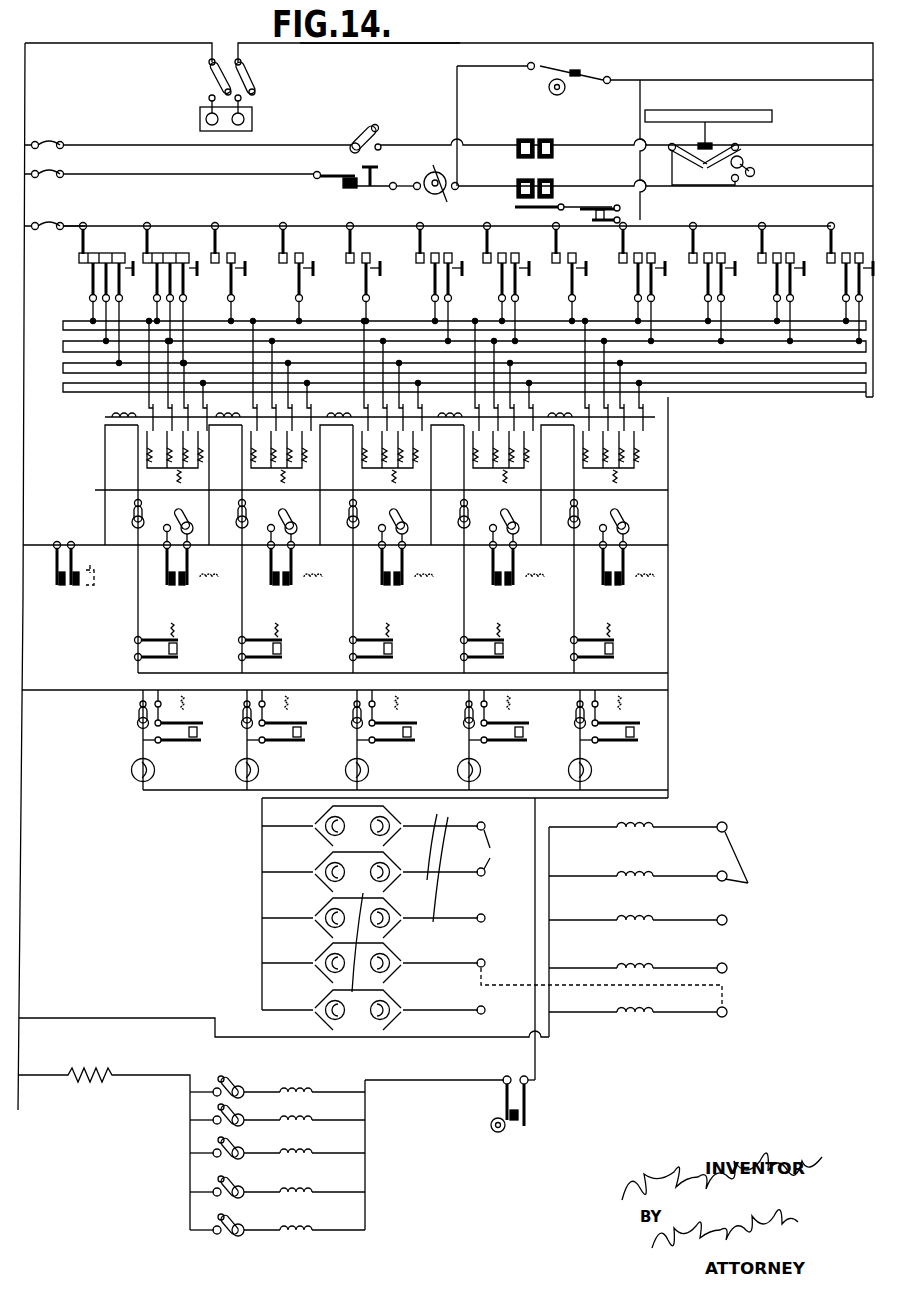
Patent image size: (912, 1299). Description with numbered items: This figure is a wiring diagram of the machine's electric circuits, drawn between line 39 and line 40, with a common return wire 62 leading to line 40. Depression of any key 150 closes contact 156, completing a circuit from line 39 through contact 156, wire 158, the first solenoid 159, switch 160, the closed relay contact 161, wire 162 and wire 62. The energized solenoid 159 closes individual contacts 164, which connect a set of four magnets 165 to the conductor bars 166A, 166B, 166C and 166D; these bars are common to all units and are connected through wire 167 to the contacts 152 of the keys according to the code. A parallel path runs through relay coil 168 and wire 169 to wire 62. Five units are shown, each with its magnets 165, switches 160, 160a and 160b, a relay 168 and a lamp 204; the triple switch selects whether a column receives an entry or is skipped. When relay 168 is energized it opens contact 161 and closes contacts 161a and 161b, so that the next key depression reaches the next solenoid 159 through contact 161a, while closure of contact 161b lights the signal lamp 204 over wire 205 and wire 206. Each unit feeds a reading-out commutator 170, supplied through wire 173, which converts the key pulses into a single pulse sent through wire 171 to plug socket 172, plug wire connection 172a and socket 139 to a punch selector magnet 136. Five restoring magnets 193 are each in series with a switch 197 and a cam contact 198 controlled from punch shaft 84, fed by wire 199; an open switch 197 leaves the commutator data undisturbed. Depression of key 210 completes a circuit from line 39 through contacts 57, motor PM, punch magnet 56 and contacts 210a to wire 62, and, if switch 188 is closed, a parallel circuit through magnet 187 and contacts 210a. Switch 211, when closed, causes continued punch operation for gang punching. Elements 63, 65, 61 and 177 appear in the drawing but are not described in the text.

The line 39 is at (115, 44).
The line 40 is at (412, 44).
The wire 62 is at (873, 70).
The conductor 63 is at (693, 80).
The cam contacts 65 is at (575, 72).
The switch 188 is at (362, 133).
The magnet 187 is at (548, 146).
The punch magnet 56 is at (552, 184).
The contacts 61 is at (598, 222).
The contacts 57 is at (345, 185).
The motor PM is at (425, 190).
The key 210 is at (712, 130).
The contacts 210a is at (705, 165).
The switch 211 is at (748, 165).
The key 150 is at (205, 250).
The wire 167 is at (72, 225).
The contacts 152 is at (106, 252).
The conductor bar 166D is at (63, 321).
The conductor bar 166C is at (63, 343).
The conductor bar 166B is at (63, 365).
The conductor bar 166A is at (63, 388).
The switch 160 is at (134, 512).
The solenoid 159 is at (214, 412).
The contacts 164 is at (150, 410).
The magnets 165 is at (150, 452).
The wire 158 is at (100, 488).
The relay coil 168 is at (176, 480).
The wire 169 is at (170, 525).
The switch 160a is at (412, 515).
The contact 161a is at (170, 588).
The relay contact 161 is at (180, 651).
The contact 156 is at (64, 588).
The wire 162 is at (398, 675).
The wire 205 is at (48, 692).
The switch 160b is at (138, 713).
The contact 161b is at (205, 744).
The signal lamp 204 is at (158, 771).
The wire 206 is at (152, 790).
The reading-out commutator device 170 is at (465, 914).
The wire 171 is at (425, 830).
The plug socket 172 is at (501, 849).
The wire 173 is at (262, 918).
The brush 177 is at (356, 942).
The punch selector magnet 136 is at (642, 935).
The socket 139 is at (735, 915).
The plug wire connection 172a is at (728, 996).
The wire 199 is at (133, 1078).
The switch 197 is at (215, 1154).
The magnet 193 is at (282, 1232).
The cam contact 198 is at (528, 1108).
The punch shaft 84 is at (494, 1130).